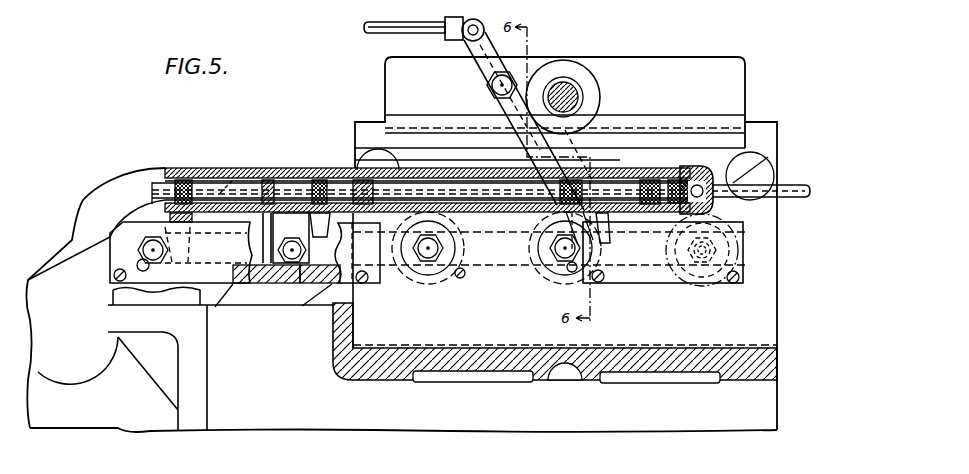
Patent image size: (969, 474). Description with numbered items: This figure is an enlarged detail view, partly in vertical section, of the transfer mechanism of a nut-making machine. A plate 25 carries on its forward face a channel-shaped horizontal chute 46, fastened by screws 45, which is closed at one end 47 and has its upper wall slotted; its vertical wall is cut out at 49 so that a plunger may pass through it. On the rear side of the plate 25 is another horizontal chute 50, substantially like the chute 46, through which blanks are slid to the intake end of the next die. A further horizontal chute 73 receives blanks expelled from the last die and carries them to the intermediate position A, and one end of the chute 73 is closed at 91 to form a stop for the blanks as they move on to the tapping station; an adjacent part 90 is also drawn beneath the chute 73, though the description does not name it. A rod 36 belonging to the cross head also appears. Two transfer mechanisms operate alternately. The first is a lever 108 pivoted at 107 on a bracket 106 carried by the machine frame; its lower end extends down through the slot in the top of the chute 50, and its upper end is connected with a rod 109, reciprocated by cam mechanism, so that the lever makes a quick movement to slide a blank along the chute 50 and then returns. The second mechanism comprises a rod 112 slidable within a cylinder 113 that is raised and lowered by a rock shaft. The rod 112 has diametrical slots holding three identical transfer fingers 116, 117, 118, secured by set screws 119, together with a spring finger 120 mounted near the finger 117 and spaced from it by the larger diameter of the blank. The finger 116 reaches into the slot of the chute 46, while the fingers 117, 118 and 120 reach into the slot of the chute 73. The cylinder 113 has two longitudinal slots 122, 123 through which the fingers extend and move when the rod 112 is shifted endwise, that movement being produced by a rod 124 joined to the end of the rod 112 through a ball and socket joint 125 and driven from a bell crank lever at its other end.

The plate 25 is at (758, 312).
The rod 36 is at (584, 96).
The screws 45 is at (600, 284).
The horizontal chute 46 is at (662, 283).
The closed end 47 is at (537, 246).
The cut-out 49 is at (550, 262).
The horizontal chute 50 is at (494, 276).
The horizontal chute 73 is at (373, 262).
The gib 90 is at (321, 284).
The closed end 91 is at (125, 250).
The bracket 106 is at (531, 78).
The pivot 107 is at (488, 87).
The lever 108 is at (478, 63).
The rod 109 is at (413, 36).
The rod 112 is at (479, 186).
The cylinder 113 is at (262, 169).
The transfer finger 116 is at (613, 222).
The transfer finger 117 is at (320, 229).
The transfer finger 118 is at (170, 216).
The set screws 119 is at (181, 198).
The spring finger 120 is at (253, 284).
The longitudinal slot 122 is at (651, 184).
The longitudinal slot 123 is at (238, 171).
The rod 124 is at (791, 189).
The ball and socket joint 125 is at (702, 186).
The intermediate position A is at (276, 258).